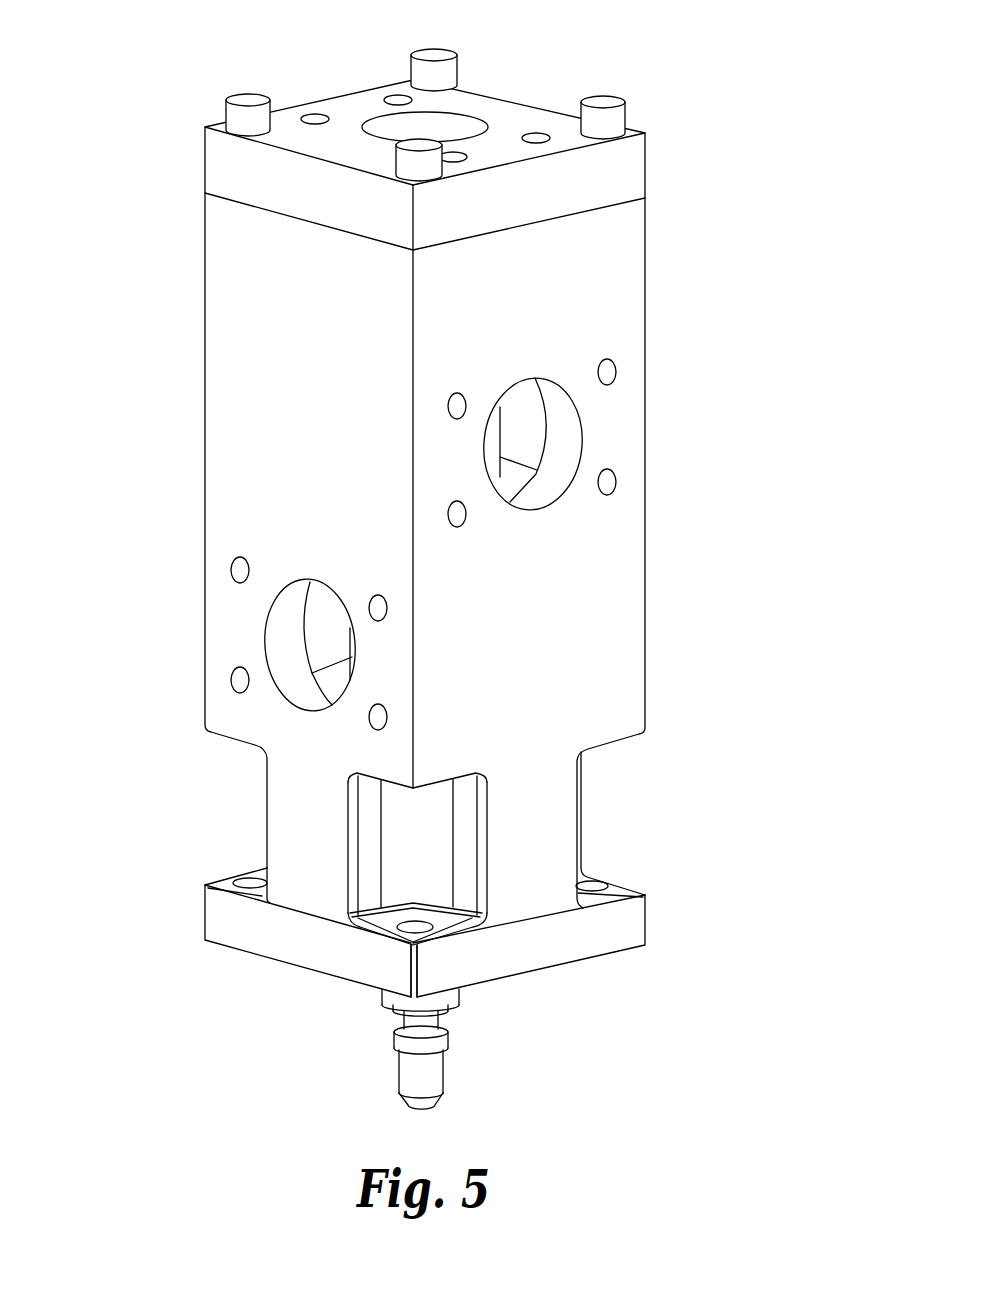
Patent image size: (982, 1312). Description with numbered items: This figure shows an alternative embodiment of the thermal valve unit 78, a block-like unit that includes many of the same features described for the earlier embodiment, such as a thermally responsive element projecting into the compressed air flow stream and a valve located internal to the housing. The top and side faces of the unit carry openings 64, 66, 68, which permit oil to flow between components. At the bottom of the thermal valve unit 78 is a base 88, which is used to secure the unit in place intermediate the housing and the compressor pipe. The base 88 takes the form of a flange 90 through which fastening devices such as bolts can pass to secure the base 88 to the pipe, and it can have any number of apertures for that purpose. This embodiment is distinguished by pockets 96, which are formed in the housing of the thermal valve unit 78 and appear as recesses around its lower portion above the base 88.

The opening 64 is at (410, 127).
The opening 66 is at (528, 439).
The opening 68 is at (295, 637).
The thermal valve unit 78 is at (722, 192).
The base 88 is at (205, 905).
The flange 90 is at (643, 920).
The pocket 96 is at (238, 822).